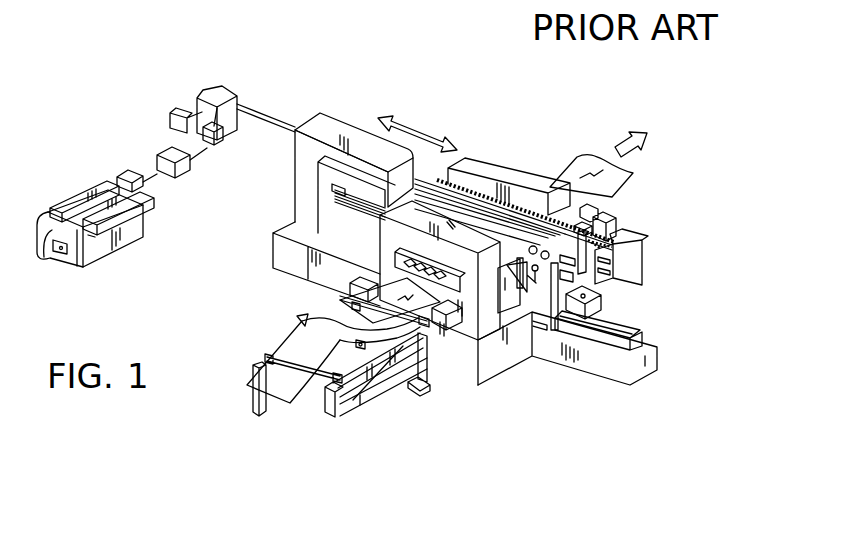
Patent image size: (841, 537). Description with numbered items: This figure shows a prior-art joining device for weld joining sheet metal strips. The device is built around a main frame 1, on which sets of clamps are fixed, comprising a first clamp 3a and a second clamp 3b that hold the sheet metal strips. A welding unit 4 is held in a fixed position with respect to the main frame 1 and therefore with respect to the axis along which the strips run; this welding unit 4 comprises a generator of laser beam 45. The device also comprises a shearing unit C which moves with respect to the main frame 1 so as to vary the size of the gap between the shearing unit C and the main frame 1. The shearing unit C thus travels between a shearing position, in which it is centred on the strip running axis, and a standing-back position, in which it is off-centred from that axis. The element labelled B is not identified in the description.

The base 1 is at (498, 362).
The transfer unit block 3a is at (485, 303).
The transfer unit block 3b is at (488, 168).
The moving unit 4 is at (615, 235).
The connector head device 45 is at (102, 247).
The board / sheet B is at (286, 392).
The carriage unit C is at (337, 130).